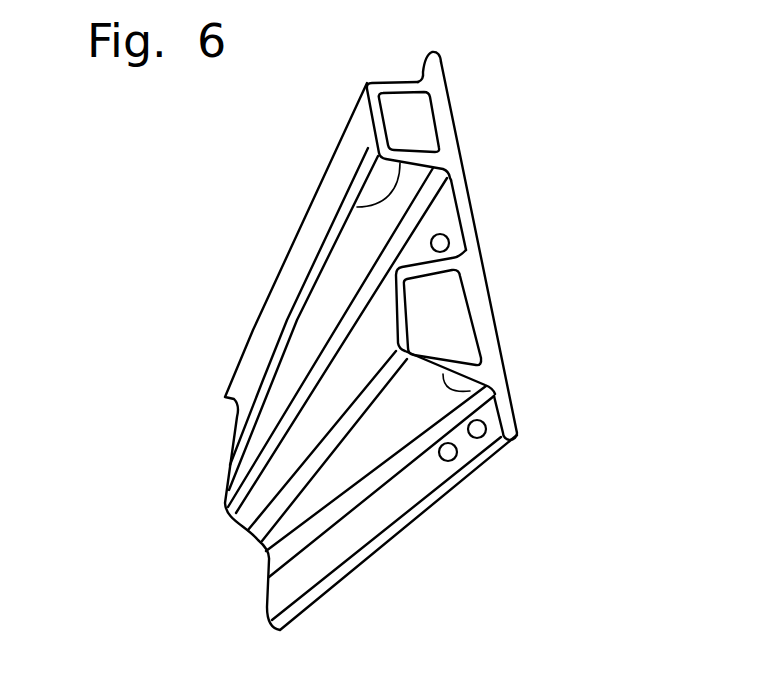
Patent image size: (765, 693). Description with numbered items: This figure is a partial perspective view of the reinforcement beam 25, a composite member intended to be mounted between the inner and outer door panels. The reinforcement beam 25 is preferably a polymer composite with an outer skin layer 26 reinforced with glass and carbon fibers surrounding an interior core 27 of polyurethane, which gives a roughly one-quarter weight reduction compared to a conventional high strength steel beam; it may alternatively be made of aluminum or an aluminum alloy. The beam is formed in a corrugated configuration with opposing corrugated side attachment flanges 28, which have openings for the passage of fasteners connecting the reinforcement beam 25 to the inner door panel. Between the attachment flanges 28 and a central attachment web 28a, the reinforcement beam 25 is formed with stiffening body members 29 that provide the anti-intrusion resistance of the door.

The reinforcement beam 25 is at (545, 168).
The outer skin layer 26 is at (374, 122).
The interior core 27 is at (430, 122).
The corrugated side attachment flange 28 is at (443, 64).
The central attachment web 28a is at (473, 213).
The stiffening body member 29 is at (357, 207).